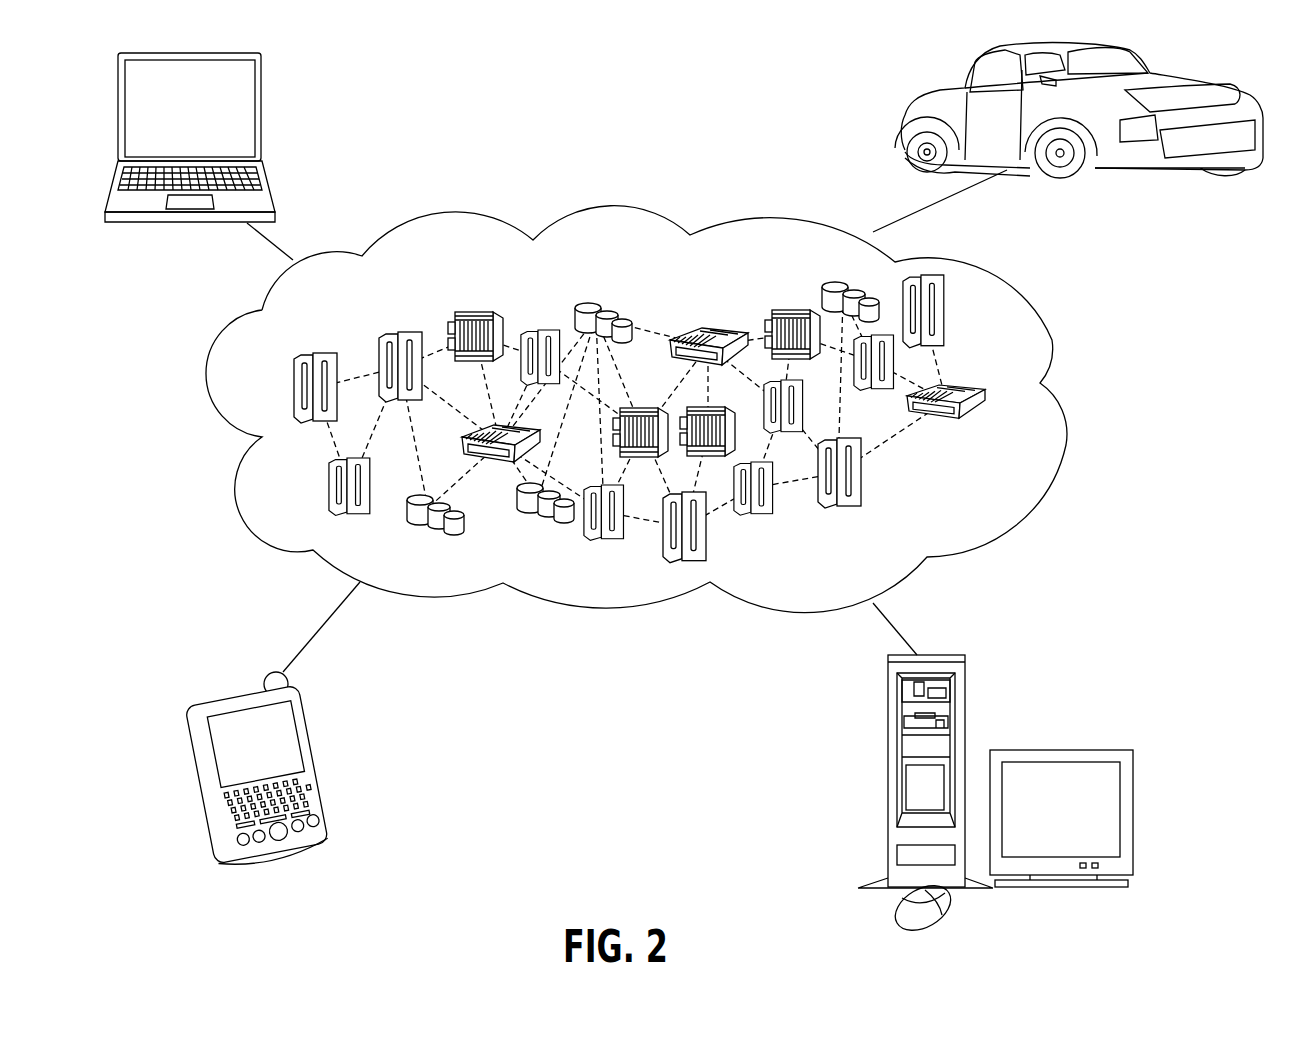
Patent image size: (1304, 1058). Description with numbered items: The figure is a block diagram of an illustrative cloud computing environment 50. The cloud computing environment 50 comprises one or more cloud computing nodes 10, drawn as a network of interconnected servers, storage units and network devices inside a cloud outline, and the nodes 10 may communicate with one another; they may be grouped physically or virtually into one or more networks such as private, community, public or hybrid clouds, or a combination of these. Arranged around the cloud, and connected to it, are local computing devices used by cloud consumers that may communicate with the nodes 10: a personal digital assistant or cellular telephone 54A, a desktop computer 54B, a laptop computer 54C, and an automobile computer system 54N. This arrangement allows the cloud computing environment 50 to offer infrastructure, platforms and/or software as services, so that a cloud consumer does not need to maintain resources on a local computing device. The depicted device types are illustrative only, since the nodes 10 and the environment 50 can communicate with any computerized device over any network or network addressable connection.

The cloud computing node 10 is at (966, 503).
The cloud computing environment 50 is at (1057, 402).
The personal digital assistant (PDA) or cellular telephone 54A is at (313, 730).
The desktop computer 54B is at (888, 717).
The laptop computer 54C is at (262, 93).
The automobile computer system 54N is at (910, 108).